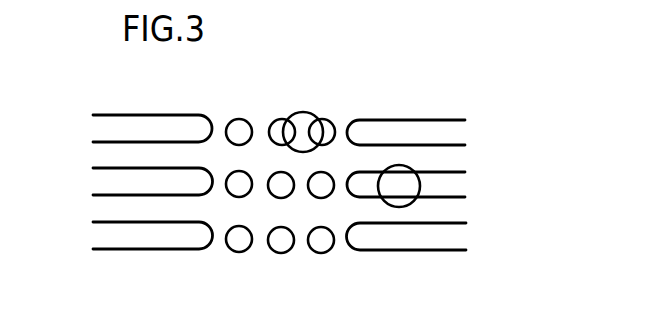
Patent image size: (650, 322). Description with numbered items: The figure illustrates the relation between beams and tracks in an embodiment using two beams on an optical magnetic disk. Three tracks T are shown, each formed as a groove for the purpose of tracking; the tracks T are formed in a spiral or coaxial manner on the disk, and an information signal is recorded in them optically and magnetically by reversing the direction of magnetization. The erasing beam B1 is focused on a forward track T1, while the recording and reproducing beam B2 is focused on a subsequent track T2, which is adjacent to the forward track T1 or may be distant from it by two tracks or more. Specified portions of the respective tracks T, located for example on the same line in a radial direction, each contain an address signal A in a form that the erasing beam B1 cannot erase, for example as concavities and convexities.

The track T is at (92, 128).
The forward track T1 is at (445, 128).
The subsequent track T2 is at (455, 188).
The address signal A is at (301, 255).
The erasing beam B1 is at (304, 117).
The recording and reproducing beam B2 is at (393, 192).